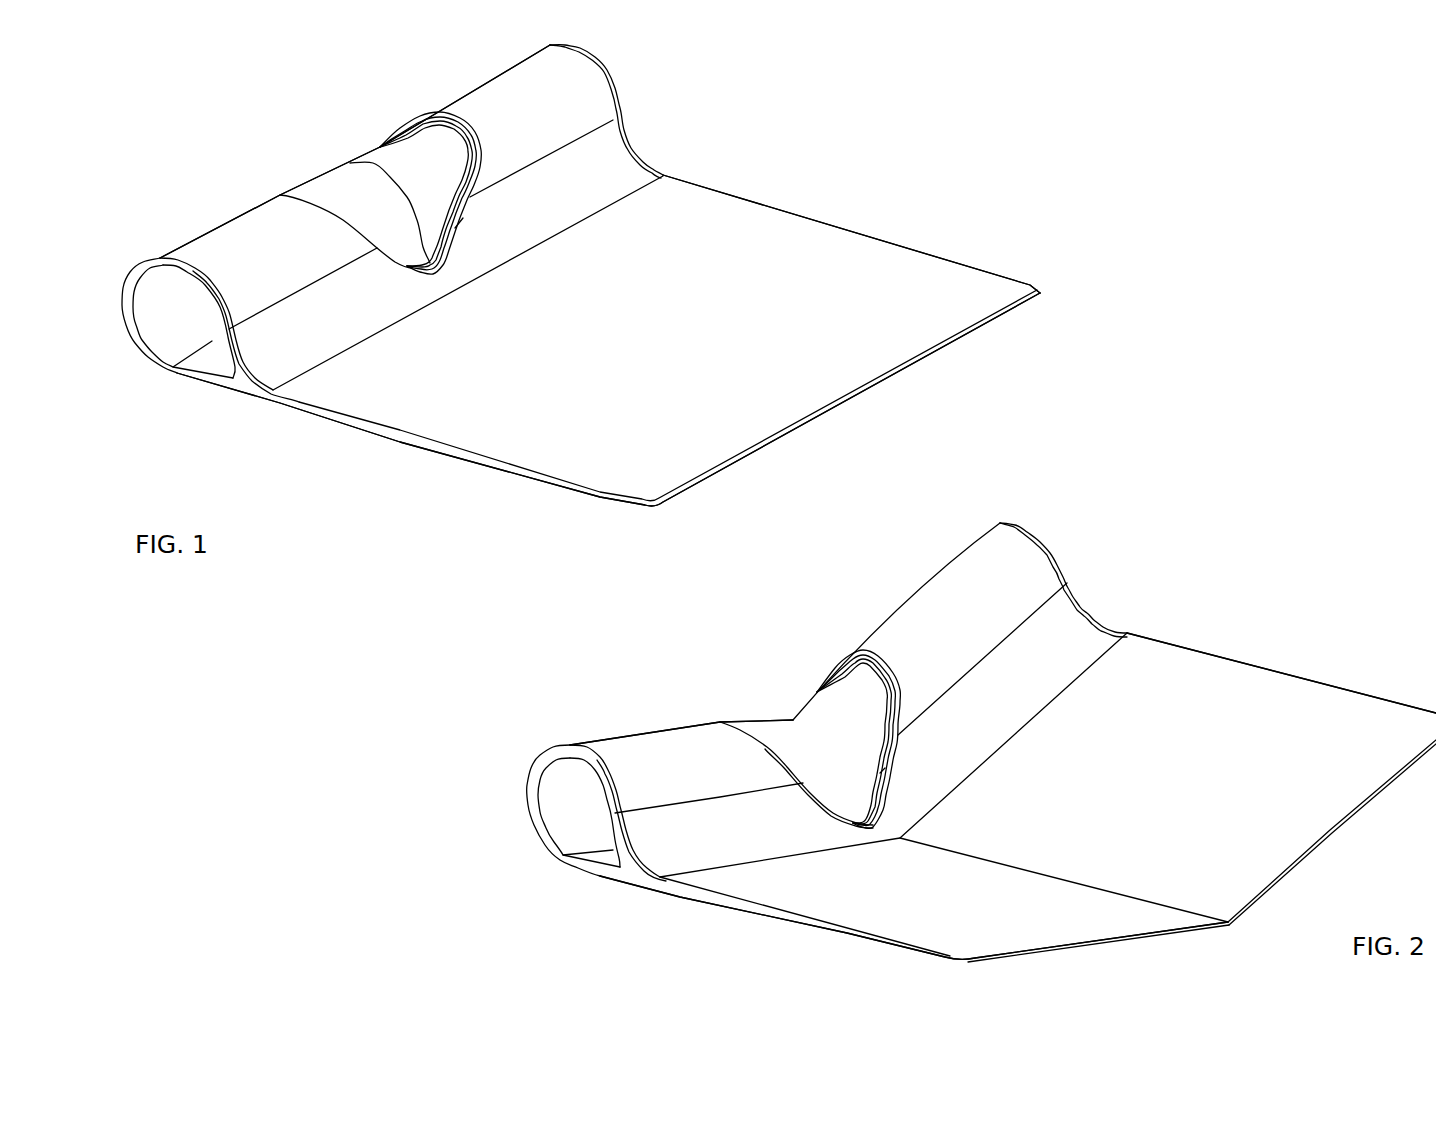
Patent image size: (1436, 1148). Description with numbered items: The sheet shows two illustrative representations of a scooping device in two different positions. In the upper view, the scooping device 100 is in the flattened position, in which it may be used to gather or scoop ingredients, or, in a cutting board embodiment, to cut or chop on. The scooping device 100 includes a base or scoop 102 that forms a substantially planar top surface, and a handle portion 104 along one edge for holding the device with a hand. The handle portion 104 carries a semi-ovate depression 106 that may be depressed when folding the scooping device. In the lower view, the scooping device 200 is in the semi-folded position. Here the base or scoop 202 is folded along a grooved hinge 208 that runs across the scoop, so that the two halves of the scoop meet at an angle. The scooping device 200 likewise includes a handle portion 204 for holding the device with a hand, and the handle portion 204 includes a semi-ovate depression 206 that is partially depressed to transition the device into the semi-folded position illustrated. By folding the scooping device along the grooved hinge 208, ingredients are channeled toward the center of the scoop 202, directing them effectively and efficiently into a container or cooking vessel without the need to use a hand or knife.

In FIG. 1, the scooping device 100 is at (866, 99).
In FIG. 1, the base or scoop 102 is at (892, 248).
In FIG. 1, the handle portion 104 is at (224, 224).
In FIG. 1, the semi-ovate depression 106 is at (351, 163).
In FIG. 2, the scooping device 200 is at (1283, 593).
In FIG. 2, the base or scoop 202 is at (1289, 677).
In FIG. 2, the handle portion 204 is at (638, 737).
In FIG. 2, the semi-ovate depression 206 is at (796, 724).
In FIG. 2, the grooved hinge 208 is at (1228, 922).